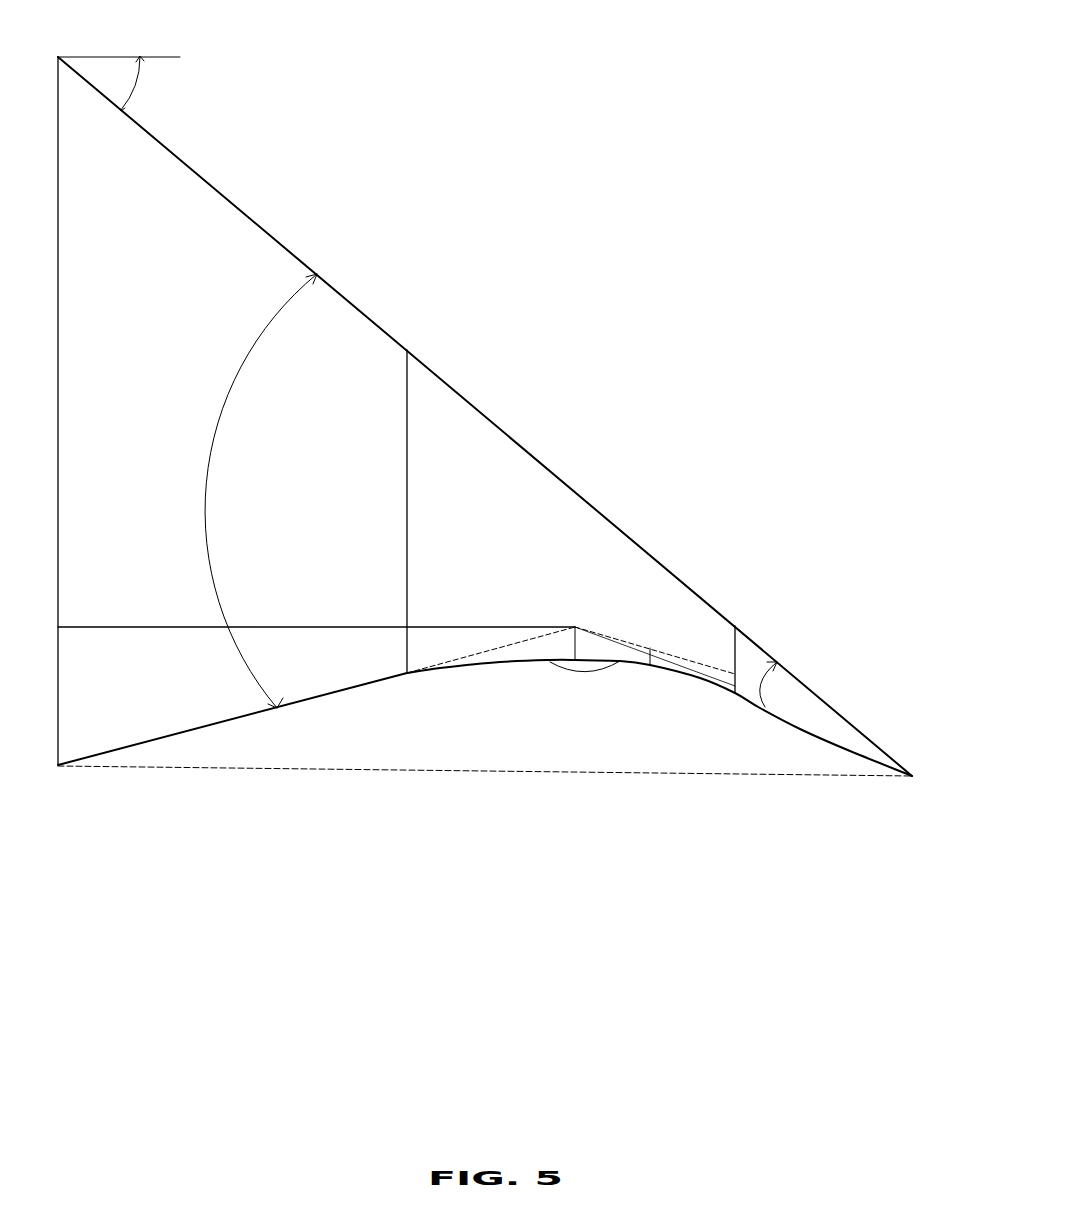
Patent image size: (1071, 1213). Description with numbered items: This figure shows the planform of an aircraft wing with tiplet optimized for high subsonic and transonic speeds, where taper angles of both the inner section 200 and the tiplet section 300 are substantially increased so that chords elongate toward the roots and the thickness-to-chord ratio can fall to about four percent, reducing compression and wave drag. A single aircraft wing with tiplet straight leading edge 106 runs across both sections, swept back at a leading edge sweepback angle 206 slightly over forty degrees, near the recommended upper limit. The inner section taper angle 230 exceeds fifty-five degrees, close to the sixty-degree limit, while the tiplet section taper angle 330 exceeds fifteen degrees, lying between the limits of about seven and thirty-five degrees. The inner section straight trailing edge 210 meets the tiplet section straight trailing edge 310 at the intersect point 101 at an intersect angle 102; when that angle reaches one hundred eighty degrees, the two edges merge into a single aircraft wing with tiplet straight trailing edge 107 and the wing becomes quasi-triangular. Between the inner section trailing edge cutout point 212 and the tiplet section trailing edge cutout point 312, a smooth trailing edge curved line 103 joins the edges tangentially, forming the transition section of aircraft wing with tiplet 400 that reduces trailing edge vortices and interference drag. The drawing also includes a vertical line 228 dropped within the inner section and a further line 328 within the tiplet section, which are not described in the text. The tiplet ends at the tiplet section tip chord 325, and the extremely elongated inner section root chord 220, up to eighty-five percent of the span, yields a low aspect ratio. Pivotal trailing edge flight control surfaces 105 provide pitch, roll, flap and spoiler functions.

The intersect point 101 is at (575, 627).
The intersect angle 102 is at (575, 672).
The trailing edge curved line 103 is at (490, 635).
The pivotal trailing edge flight control surfaces 105 is at (525, 642).
The aircraft wing with tiplet straight leading edge 106 is at (275, 237).
The aircraft wing with tiplet straight trailing edge 107 is at (515, 772).
The inner section 200 is at (185, 195).
The leading edge sweepback angle 206 is at (143, 90).
The inner section straight trailing edge 210 is at (313, 703).
The inner section trailing edge cutout point 212 is at (410, 676).
The inner section root chord 220 is at (60, 335).
The vertical line 228 is at (408, 480).
The inner section taper angle 230 is at (217, 424).
The tiplet section 300 is at (753, 657).
The tiplet section straight trailing edge 310 is at (780, 720).
The tiplet section trailing edge cutout point 312 is at (733, 697).
The tiplet section tip chord 325 is at (915, 773).
The aft chord 328 is at (733, 655).
The tiplet section taper angle 330 is at (767, 686).
The transition section of aircraft wing with tiplet 400 is at (532, 493).